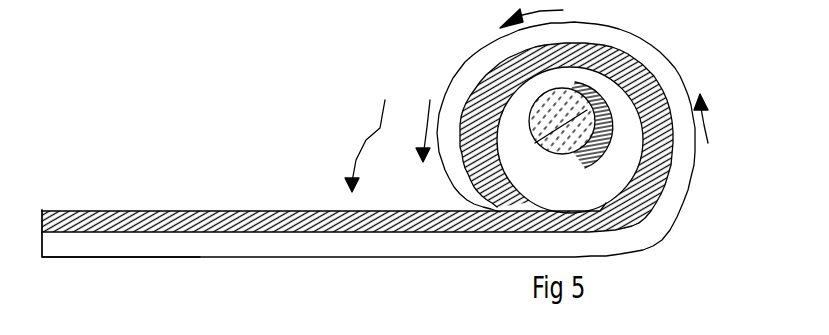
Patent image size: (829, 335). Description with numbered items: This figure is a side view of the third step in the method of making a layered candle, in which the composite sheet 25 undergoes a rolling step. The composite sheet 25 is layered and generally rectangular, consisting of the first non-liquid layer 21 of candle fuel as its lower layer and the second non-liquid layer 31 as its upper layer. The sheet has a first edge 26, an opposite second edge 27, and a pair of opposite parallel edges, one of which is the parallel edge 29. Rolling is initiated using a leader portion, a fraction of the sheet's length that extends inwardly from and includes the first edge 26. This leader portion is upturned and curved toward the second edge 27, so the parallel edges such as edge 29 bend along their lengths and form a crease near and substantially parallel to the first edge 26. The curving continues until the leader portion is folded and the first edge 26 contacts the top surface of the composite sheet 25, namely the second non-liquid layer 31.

The first non-liquid layer 21 is at (230, 242).
The composite sheet 25 is at (526, 100).
The first edge 26 is at (602, 117).
The second edge 27 is at (43, 210).
The parallel edge 29 is at (288, 210).
The second non-liquid layer 31 is at (233, 210).